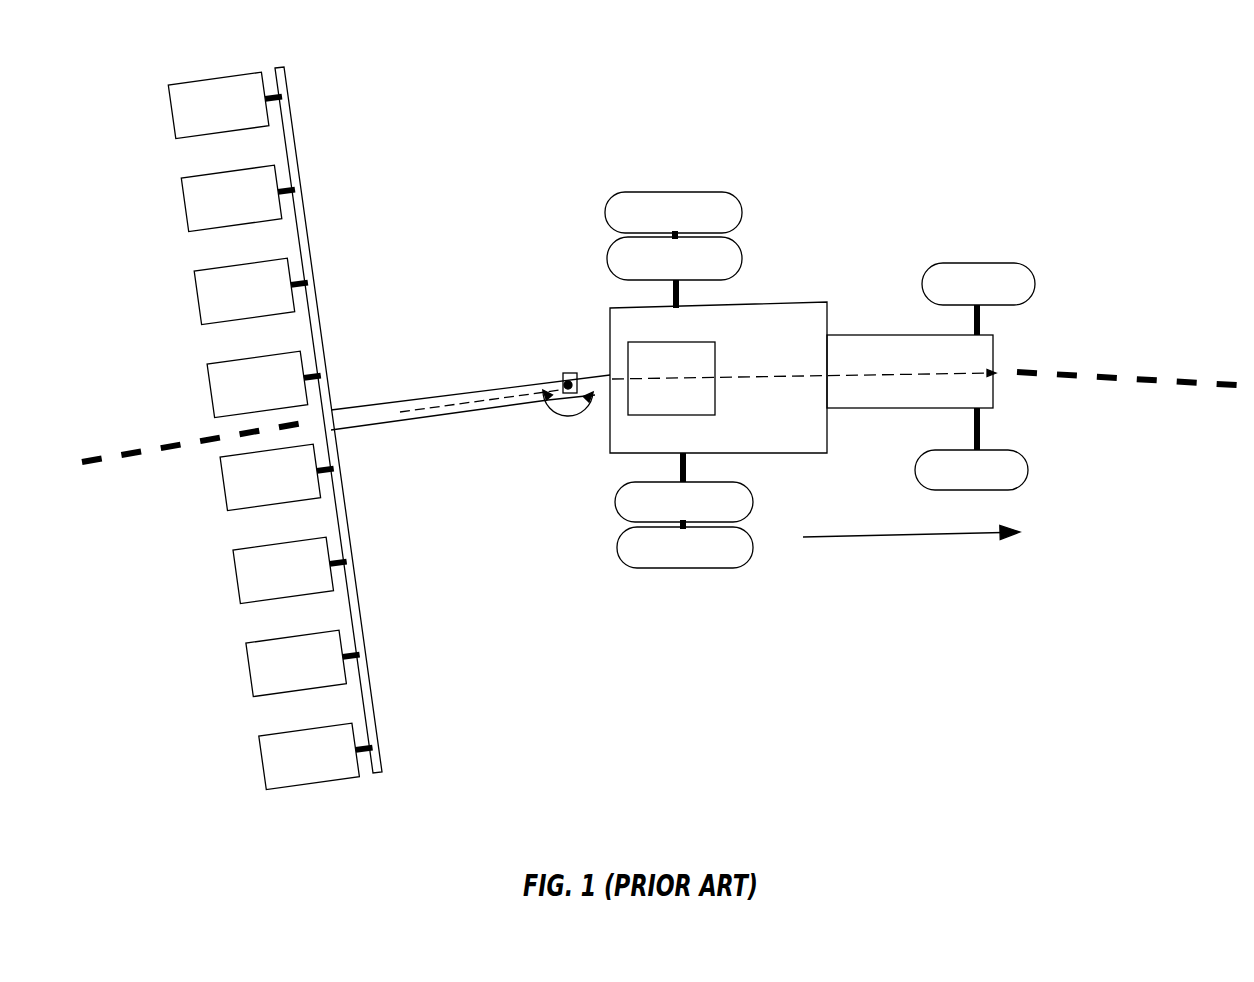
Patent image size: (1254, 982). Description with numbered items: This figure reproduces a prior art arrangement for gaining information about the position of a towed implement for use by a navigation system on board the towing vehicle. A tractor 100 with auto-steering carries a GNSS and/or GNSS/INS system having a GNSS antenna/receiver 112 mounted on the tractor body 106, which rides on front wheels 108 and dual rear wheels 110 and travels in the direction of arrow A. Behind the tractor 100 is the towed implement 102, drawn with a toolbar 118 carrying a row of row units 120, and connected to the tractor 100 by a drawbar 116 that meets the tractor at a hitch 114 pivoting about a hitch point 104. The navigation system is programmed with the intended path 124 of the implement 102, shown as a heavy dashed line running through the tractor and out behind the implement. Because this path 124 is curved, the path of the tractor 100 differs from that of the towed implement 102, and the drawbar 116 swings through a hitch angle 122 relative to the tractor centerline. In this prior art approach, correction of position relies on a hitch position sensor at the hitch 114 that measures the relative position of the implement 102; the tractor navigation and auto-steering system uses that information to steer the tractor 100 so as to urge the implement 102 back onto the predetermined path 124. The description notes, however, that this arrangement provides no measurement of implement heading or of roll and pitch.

The tractor 100 is at (862, 192).
The implement 102 is at (398, 281).
The hitch pivot point 104 is at (565, 380).
The tractor body 106 is at (905, 335).
The front wheels 108 is at (1020, 270).
The rear wheels 110 is at (742, 248).
The GNSS antenna/receiver 112 is at (695, 376).
The hitch 114 is at (592, 373).
The drawbar / tongue 116 is at (443, 417).
The implement toolbar 118 is at (307, 220).
The row units 120 is at (197, 290).
The hitch angle 122 is at (577, 415).
The path 124 is at (132, 457).